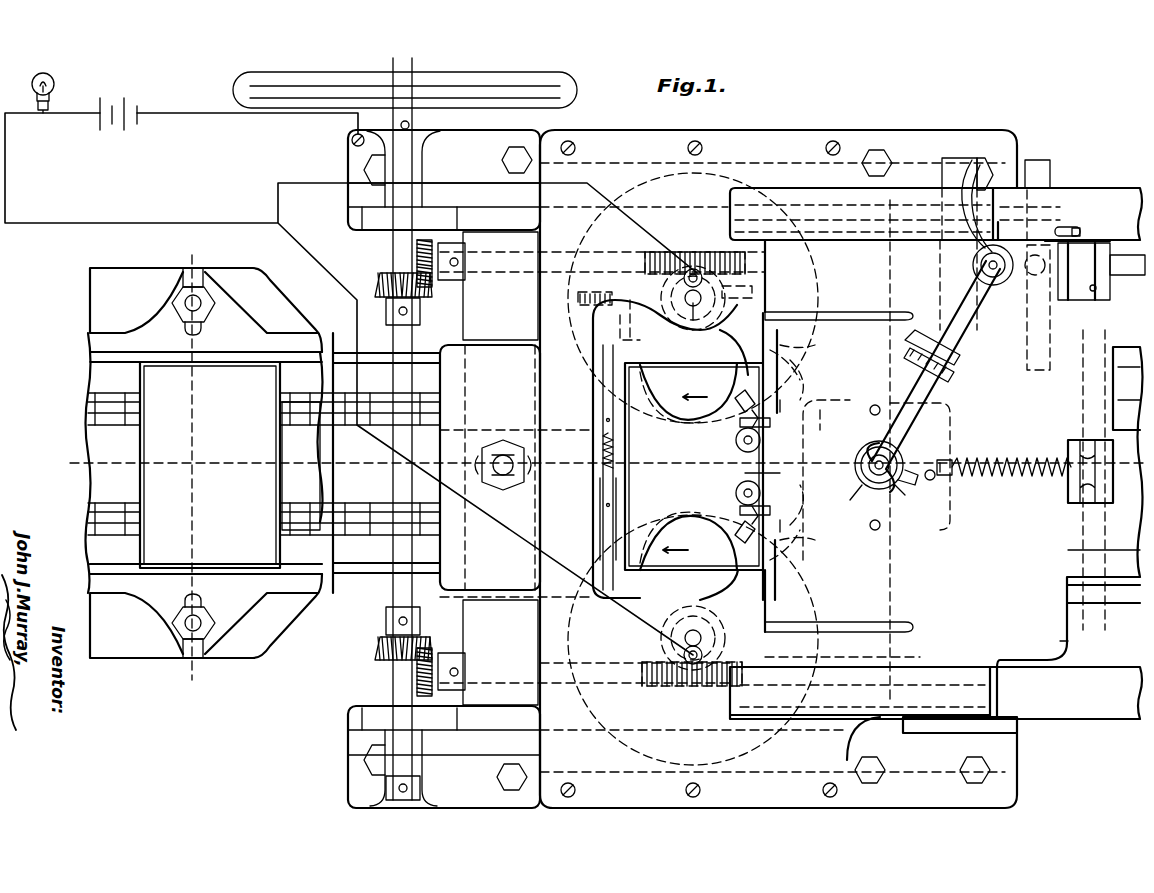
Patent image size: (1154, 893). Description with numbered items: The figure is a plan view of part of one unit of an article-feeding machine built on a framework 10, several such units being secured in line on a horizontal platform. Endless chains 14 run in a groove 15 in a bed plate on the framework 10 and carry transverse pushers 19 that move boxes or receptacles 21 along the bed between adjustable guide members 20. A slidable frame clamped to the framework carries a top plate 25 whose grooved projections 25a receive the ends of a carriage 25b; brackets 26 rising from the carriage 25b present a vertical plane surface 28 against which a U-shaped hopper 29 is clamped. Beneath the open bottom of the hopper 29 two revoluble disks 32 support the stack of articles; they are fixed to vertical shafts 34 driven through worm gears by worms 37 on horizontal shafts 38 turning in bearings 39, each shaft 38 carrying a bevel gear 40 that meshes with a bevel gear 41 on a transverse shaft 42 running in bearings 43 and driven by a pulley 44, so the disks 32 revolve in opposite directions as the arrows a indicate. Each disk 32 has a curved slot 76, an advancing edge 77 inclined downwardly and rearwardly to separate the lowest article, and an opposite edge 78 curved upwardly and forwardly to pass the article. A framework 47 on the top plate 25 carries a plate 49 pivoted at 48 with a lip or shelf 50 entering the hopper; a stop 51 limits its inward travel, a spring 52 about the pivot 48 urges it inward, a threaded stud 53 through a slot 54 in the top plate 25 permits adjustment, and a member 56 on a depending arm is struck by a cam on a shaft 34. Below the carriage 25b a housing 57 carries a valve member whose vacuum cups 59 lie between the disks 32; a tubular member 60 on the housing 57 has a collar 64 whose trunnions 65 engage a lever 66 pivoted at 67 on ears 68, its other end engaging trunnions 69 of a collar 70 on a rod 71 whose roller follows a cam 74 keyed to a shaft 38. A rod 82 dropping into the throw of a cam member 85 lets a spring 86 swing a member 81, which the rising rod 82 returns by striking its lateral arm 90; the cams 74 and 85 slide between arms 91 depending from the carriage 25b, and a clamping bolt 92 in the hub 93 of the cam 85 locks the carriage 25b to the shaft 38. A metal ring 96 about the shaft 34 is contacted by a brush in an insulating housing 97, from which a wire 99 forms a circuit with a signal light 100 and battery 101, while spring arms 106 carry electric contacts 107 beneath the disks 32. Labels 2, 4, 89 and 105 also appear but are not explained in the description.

The axis center line 2 is at (605, 463).
The nut 4 is at (193, 465).
The framework 10 is at (483, 140).
The endless chains 14 is at (88, 401).
The groove 15 is at (100, 434).
The pushers 19 is at (284, 450).
The guide members 20 is at (248, 348).
The boxes or similar receptacles 21 is at (140, 445).
The top plate 25 is at (442, 440).
The grooved projections 25a is at (796, 196).
The carriage 25b is at (1068, 645).
The brackets 26 is at (808, 348).
The continuous vertical plane surface 28 is at (795, 365).
The U-shaped hoppers 29 is at (648, 366).
The revoluble disks 32 is at (685, 424).
The vertical shafts 34 is at (693, 310).
The worm 37 is at (697, 252).
The horizontal shaft 38 is at (1125, 278).
The bearings 39 is at (486, 312).
The bevel gear 40 is at (434, 282).
The bevel gear 41 is at (376, 288).
The transverse shaft 42 is at (403, 66).
The bearings 43 is at (425, 165).
The pulley 44 is at (455, 76).
The framework 47 is at (480, 340).
The pivot member 48 is at (600, 375).
The plate 49 is at (600, 512).
The lip or shelf 50 is at (645, 448).
The stop 51 is at (644, 320).
The spring 52 is at (602, 462).
The threaded stud 53 is at (495, 455).
The slot 54 is at (528, 465).
The member 56 is at (578, 300).
The housing 57 is at (960, 535).
The vacuum cups 59 is at (736, 447).
The tubular member 60 is at (866, 476).
The collar 64 is at (878, 490).
The trunnions 65 is at (918, 484).
The lever 66 is at (935, 415).
The pivot 67 is at (960, 375).
The ears 68 is at (950, 380).
The trunnions 69 is at (972, 160).
The collar 70 is at (995, 285).
The rod 71 is at (988, 285).
The cam 74 is at (958, 158).
The curved slot 76 is at (735, 350).
The advancing edge 77 is at (803, 560).
The opposite edge 78 is at (730, 548).
The member 81 is at (1080, 440).
The rod 82 is at (1065, 227).
The cam member 85 is at (1038, 162).
The spring 86 is at (1022, 466).
The guide 89 is at (1075, 372).
The lateral arm 90 is at (1045, 290).
The arms 91 is at (1100, 243).
The clamping bolt 92 is at (1082, 220).
The hub 93 is at (1095, 240).
The metal ring 96 is at (660, 280).
The housing 97 is at (688, 270).
The wire 99 is at (252, 115).
The signal light 100 is at (58, 92).
The battery 101 is at (130, 96).
The guide 105 is at (836, 419).
The spring arms 106 is at (770, 422).
The electric contacts 107 is at (733, 406).